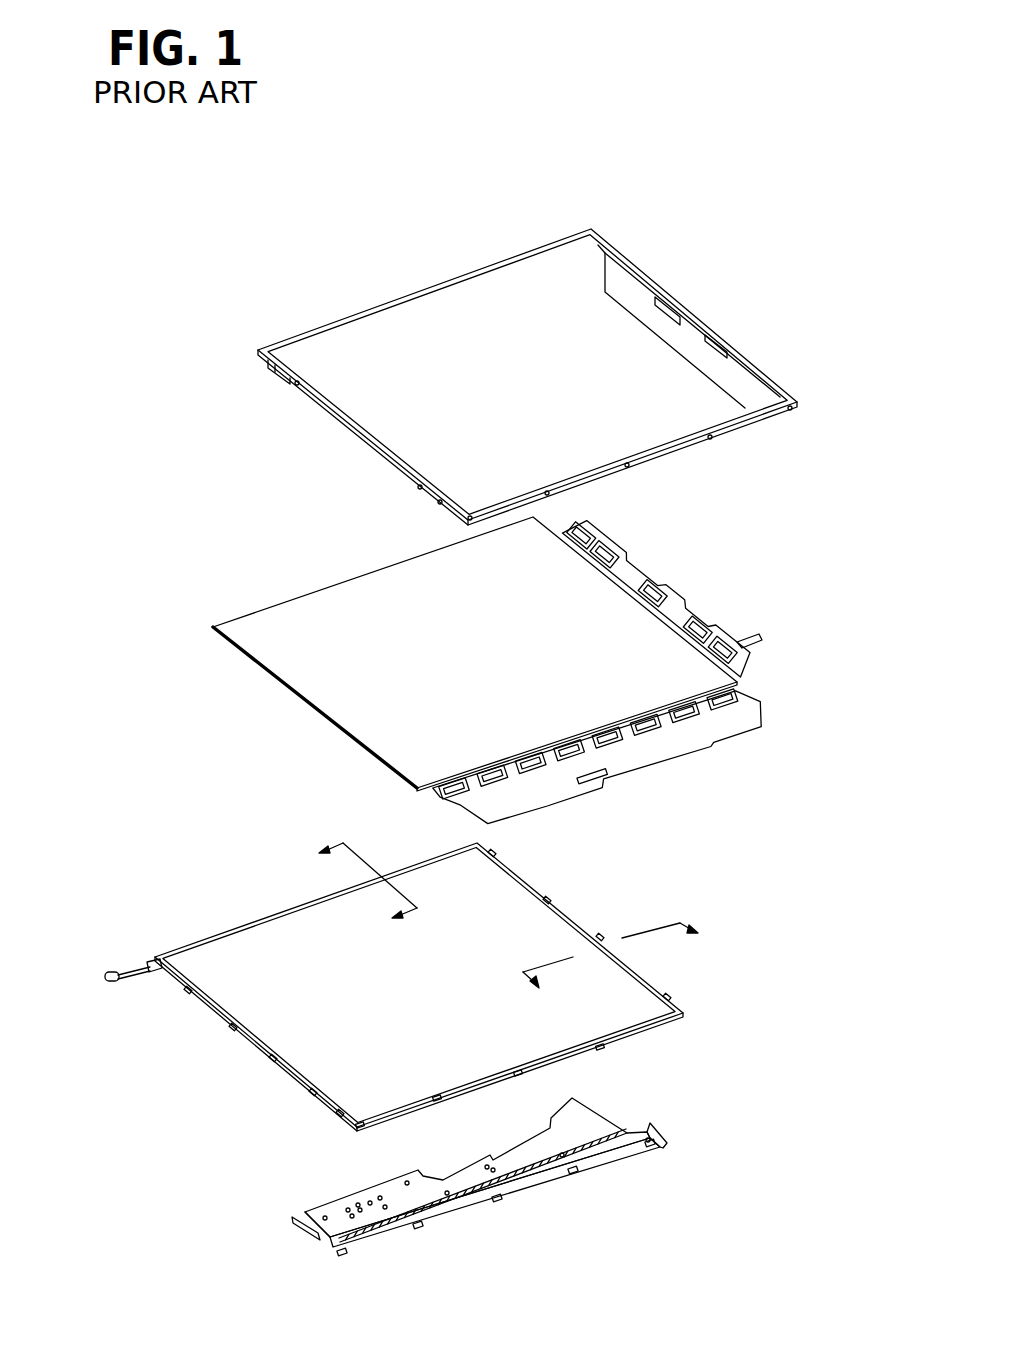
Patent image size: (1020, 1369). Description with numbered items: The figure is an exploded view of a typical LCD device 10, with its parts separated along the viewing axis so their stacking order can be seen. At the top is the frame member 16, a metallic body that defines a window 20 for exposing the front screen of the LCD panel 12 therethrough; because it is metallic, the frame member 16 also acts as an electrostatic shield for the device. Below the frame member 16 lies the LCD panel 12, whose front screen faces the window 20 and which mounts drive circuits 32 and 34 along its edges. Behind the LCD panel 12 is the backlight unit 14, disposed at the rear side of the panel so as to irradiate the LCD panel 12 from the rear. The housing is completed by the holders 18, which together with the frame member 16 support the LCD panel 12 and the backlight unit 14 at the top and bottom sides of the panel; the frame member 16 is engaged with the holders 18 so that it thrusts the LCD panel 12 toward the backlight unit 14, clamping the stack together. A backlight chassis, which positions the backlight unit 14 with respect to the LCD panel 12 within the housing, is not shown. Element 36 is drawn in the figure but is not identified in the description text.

The LCD device 10 is at (564, 164).
The LCD panel 12 is at (268, 606).
The backlight unit 14 is at (272, 913).
The frame member 16 is at (347, 318).
The holders 18 is at (340, 1198).
The window 20 is at (473, 307).
The drive circuit 32 is at (683, 607).
The drive circuit 34 is at (665, 748).
The lamp wire 36 is at (140, 963).